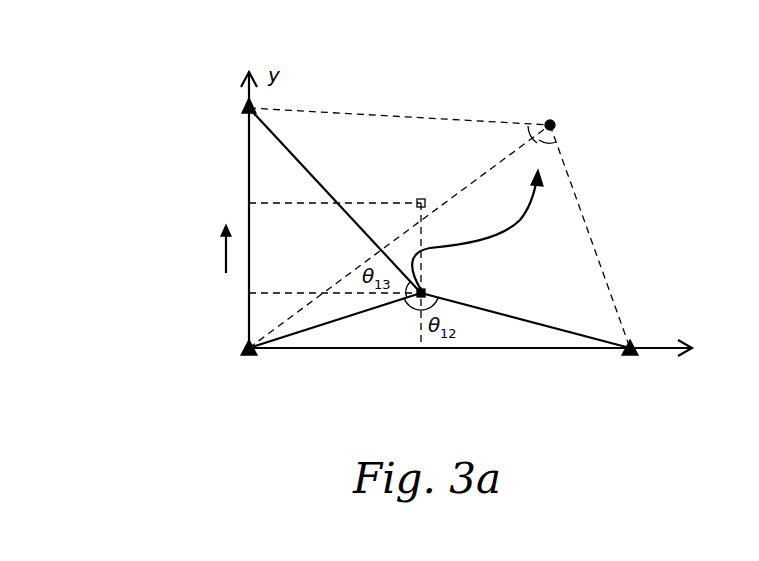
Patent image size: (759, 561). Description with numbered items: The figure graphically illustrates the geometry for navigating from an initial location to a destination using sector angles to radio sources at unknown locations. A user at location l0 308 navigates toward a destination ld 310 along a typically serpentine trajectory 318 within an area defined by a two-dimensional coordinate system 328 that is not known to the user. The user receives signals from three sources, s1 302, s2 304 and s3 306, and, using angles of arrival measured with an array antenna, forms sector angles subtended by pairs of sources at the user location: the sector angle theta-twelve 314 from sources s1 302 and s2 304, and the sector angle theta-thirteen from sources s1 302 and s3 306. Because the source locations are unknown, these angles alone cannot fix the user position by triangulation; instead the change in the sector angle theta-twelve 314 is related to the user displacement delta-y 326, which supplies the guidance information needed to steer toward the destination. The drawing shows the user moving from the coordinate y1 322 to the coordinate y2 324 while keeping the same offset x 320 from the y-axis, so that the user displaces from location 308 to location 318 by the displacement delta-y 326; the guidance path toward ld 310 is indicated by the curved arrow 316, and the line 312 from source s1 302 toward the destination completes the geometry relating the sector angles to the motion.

The source s1 302 is at (218, 380).
The source s2 304 is at (618, 375).
The source s3 306 is at (212, 105).
The user location l0 308 is at (428, 284).
The destination ld 310 is at (547, 116).
The line from first sensor to actual location 312 is at (357, 268).
The sector angle theta-12 314 is at (456, 318).
The correction path arrow 316 is at (531, 203).
The serpentine trajectory / intermediate location 318 is at (424, 192).
The x offset 320 is at (413, 388).
The y1 coordinate 322 is at (218, 306).
The y2 coordinate 324 is at (218, 186).
The displacement delta-y 326 is at (172, 253).
The 2D coordinate system 328 is at (556, 350).